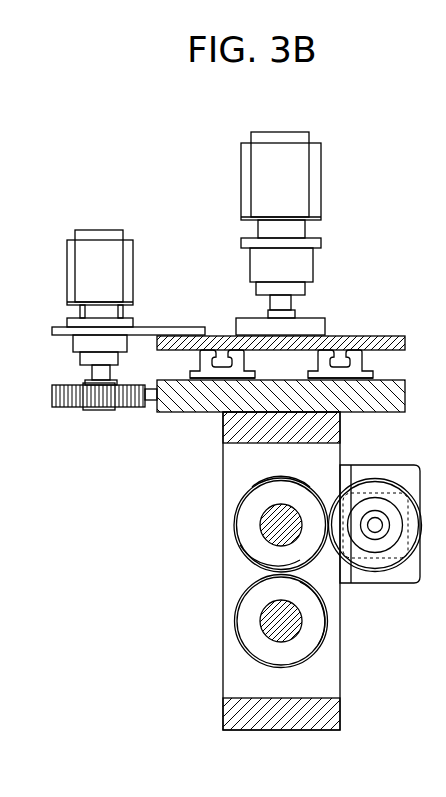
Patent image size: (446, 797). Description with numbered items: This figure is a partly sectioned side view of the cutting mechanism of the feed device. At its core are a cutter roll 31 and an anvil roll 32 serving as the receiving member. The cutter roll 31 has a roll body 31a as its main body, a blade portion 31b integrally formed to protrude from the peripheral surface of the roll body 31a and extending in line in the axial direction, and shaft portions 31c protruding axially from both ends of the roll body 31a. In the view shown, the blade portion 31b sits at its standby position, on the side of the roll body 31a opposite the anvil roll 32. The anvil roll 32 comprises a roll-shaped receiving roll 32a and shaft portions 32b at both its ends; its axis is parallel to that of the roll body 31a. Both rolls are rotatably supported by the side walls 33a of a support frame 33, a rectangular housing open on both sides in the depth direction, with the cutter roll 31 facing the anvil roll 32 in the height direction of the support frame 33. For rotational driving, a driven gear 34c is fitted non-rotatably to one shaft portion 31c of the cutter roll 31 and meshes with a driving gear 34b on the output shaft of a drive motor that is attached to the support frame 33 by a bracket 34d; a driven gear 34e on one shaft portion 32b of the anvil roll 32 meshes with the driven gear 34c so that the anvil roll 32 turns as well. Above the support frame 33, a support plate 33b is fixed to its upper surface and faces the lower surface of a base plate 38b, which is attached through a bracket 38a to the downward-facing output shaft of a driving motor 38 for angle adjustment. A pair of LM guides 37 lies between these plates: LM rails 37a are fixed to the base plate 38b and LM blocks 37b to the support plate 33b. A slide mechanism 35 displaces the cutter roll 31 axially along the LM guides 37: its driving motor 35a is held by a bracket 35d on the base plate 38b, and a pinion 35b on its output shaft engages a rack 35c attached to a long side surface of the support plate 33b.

The cutter roll 31 is at (316, 558).
The roll body 31a is at (257, 540).
The blade portion 31b is at (281, 477).
The shaft portions 31c is at (276, 522).
The anvil roll 32 is at (325, 630).
The receiving roll 32a is at (311, 640).
The shaft portions 32b is at (260, 625).
The support frame 33 is at (222, 667).
The side walls 33a is at (333, 685).
The support plate 33b is at (170, 405).
The driving gear 34b is at (370, 490).
The driven gear 34c is at (240, 502).
The bracket 34d is at (393, 577).
The driven gear 34e is at (240, 597).
The slide mechanism 35 is at (47, 243).
The driving motor 35a is at (97, 250).
The pinion 35b is at (55, 327).
The rack 35c is at (147, 400).
The bracket 35d is at (105, 334).
The LM guides 37 is at (195, 352).
The LM rails 37a is at (200, 335).
The LM blocks 37b is at (195, 375).
The driving motor 38 is at (261, 170).
The bracket 38a is at (248, 325).
The base plate 38b is at (293, 333).